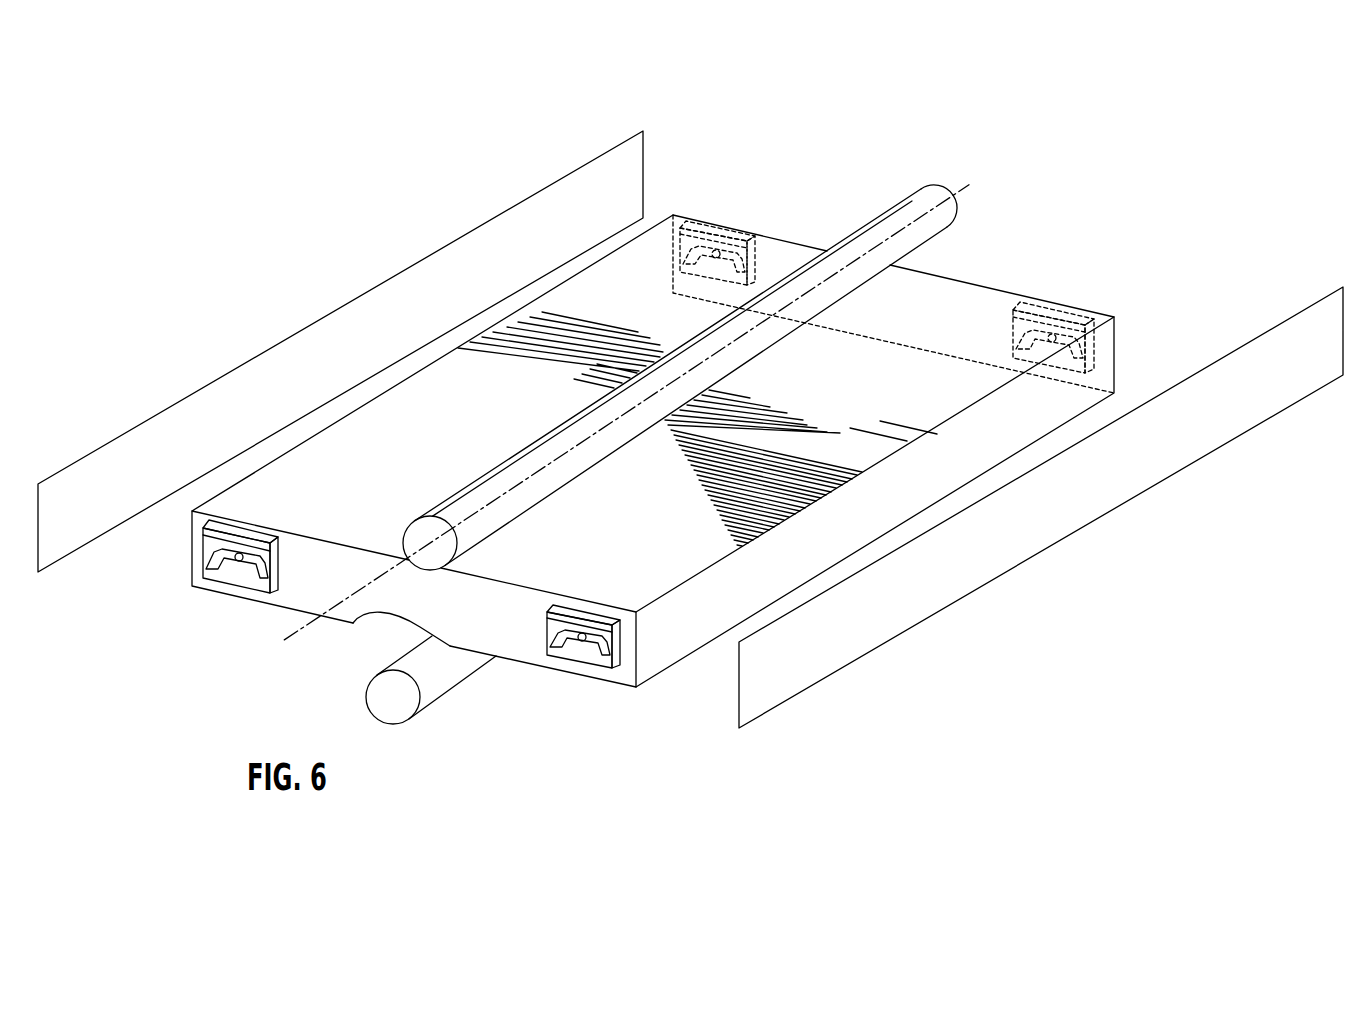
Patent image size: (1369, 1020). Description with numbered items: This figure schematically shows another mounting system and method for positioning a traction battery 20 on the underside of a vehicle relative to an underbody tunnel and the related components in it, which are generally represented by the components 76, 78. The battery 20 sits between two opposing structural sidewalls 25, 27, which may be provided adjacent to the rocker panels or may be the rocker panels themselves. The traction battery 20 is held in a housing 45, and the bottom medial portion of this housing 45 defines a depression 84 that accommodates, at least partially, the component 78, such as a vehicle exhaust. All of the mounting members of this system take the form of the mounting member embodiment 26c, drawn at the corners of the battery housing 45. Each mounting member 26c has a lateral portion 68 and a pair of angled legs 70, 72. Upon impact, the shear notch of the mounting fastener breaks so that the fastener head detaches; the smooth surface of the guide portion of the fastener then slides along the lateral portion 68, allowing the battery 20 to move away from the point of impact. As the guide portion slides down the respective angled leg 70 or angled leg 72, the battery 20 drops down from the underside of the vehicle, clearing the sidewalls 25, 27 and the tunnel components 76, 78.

The battery 20 is at (967, 312).
The sidewall 25 is at (1328, 327).
The sidewall 27 is at (633, 171).
The mounting member 26c is at (631, 463).
The housing 45 is at (589, 540).
The lateral portion 68 is at (262, 556).
The angled leg 70 is at (203, 563).
The angled leg 72 is at (267, 592).
The underbody tunnel component 76 is at (925, 194).
The component 78 is at (390, 713).
The depression 84 is at (382, 627).